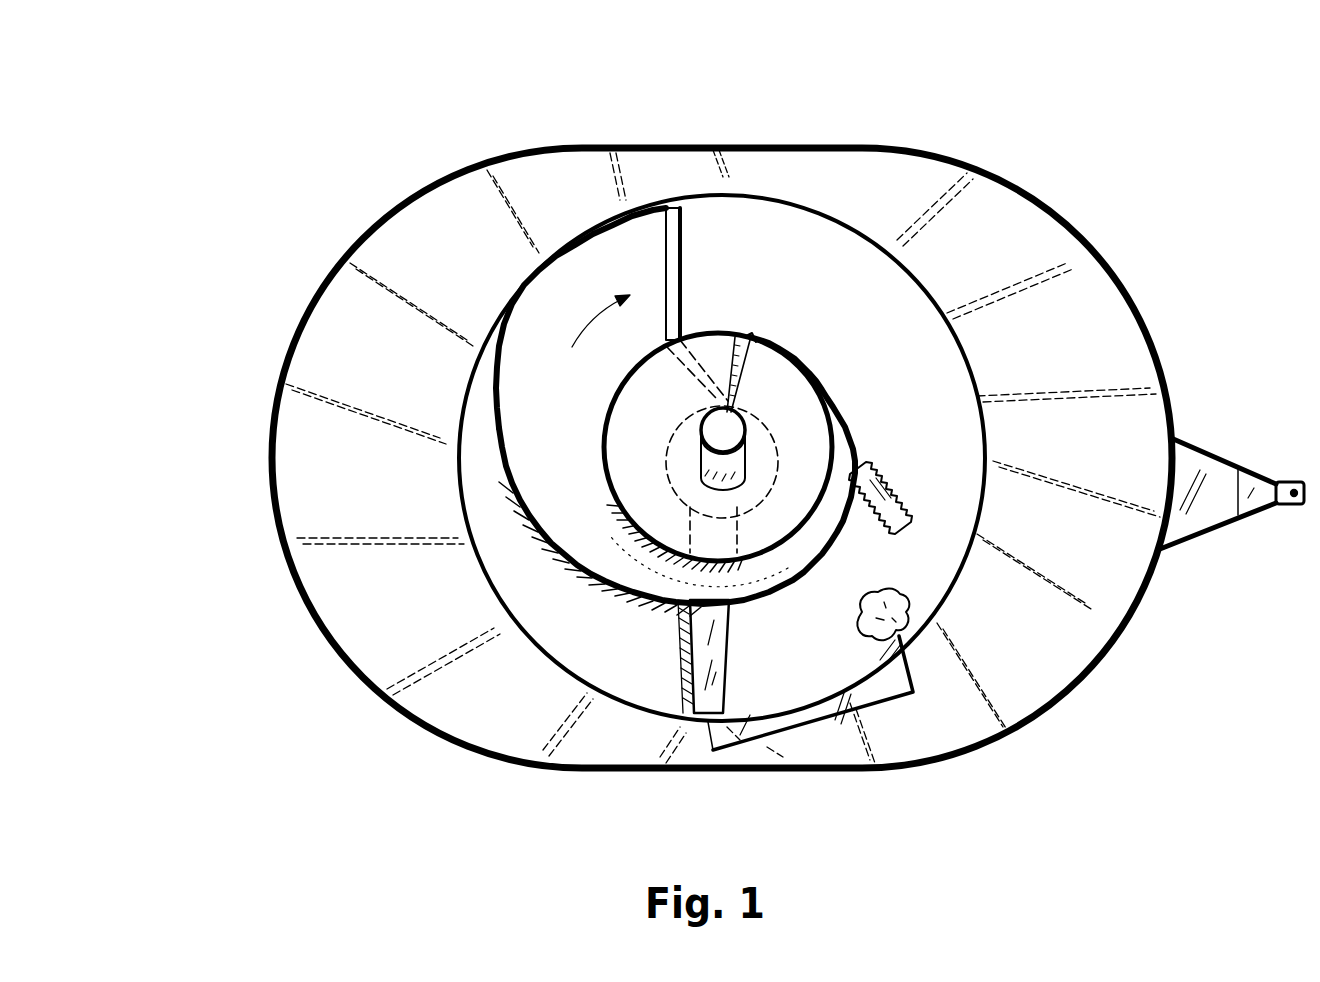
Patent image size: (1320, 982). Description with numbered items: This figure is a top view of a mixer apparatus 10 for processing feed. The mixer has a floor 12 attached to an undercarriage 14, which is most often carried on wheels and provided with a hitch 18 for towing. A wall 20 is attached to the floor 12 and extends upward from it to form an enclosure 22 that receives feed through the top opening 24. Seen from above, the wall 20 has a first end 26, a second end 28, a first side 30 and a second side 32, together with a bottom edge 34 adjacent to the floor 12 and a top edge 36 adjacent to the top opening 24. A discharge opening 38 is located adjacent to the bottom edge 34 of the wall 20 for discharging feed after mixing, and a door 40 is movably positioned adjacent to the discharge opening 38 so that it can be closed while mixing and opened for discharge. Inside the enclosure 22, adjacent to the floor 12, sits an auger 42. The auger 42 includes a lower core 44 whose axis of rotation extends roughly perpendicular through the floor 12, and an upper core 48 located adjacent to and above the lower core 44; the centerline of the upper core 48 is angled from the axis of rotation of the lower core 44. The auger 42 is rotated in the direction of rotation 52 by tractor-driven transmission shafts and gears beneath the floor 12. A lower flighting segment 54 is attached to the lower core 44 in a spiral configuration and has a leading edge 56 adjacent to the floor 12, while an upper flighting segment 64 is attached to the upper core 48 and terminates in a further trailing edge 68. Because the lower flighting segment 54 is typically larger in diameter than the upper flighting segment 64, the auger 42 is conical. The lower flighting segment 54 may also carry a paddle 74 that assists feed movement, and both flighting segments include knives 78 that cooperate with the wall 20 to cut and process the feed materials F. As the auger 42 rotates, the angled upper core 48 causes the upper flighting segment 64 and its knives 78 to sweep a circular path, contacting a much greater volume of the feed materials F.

The mixer apparatus 10 is at (943, 150).
The floor 12 is at (577, 660).
The undercarriage 14 is at (1203, 457).
The hitch 18 is at (1288, 505).
The wall 20 is at (997, 205).
The enclosure 22 is at (1031, 237).
The top opening 24 is at (1100, 269).
The first end 26 is at (1104, 369).
The second end 28 is at (325, 457).
The first side 30 is at (762, 160).
The second side 32 is at (647, 740).
The bottom edge 34 is at (470, 545).
The top edge 36 is at (290, 330).
The discharge opening 38 is at (763, 730).
The door 40 is at (850, 707).
The auger 42 is at (587, 262).
The lower core 44 is at (777, 443).
The upper core 48 is at (740, 430).
The direction of rotation 52 is at (582, 340).
The lower flighting segment 54 is at (550, 305).
The leading edge 56 is at (683, 282).
The upper flighting segment 64 is at (650, 513).
The further trailing edge 68 is at (733, 380).
The paddle 74 is at (703, 703).
The knives 78 is at (903, 543).
The feed materials F is at (913, 640).